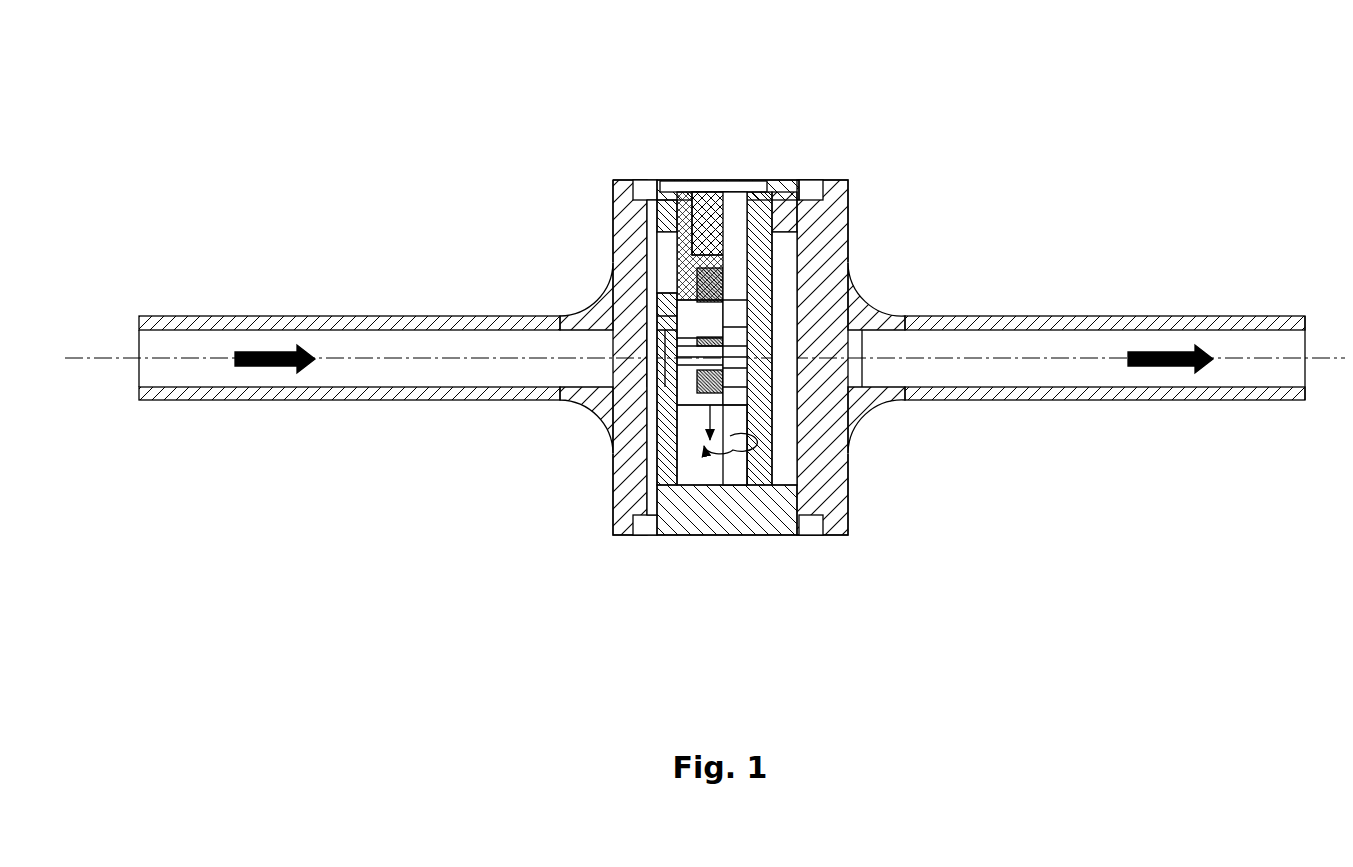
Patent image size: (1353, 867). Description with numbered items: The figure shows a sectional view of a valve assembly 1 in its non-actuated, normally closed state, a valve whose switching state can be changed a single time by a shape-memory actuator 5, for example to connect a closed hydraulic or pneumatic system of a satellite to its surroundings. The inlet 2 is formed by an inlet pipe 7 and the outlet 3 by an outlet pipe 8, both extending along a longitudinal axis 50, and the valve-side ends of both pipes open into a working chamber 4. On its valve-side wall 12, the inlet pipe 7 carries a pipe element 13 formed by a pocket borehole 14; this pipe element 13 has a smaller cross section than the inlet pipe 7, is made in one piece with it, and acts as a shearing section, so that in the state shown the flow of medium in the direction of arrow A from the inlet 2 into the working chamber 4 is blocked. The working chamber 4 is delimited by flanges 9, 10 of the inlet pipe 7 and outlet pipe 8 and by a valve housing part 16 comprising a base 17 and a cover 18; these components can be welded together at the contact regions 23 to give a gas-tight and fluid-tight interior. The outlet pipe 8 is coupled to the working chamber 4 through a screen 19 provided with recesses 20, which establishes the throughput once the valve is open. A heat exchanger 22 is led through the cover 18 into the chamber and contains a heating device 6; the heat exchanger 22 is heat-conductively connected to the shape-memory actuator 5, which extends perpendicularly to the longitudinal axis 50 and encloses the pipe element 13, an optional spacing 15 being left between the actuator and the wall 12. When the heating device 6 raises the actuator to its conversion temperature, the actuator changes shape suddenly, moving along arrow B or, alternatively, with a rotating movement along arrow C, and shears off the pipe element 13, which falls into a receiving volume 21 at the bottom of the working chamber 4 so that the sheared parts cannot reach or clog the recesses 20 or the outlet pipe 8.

The valve assembly 1 is at (889, 115).
The inlet 2 is at (550, 336).
The outlet 3 is at (918, 344).
The working chamber 4 is at (735, 342).
The shape-memory actuator 5 is at (683, 309).
The heating device 6 is at (707, 190).
The inlet pipe 7 is at (369, 345).
The outlet pipe 8 is at (1062, 340).
The flange 9 is at (612, 478).
The flange 10 is at (849, 488).
The valve-side wall 12 is at (663, 333).
The pipe element 13 is at (690, 392).
The pocket borehole 14 is at (667, 360).
The spacing 15 is at (686, 410).
The valve housing part 16 is at (677, 538).
The base 17 is at (782, 522).
The cover 18 is at (783, 190).
The screen 19 is at (750, 352).
The recesses 20 is at (765, 357).
The receiving volume 21 is at (707, 472).
The heat exchanger 22 is at (680, 190).
The contact regions 23 is at (631, 168).
The longitudinal axis 50 is at (1332, 357).
The arrow A is at (270, 367).
The arrow B is at (714, 428).
The arrow C is at (730, 459).